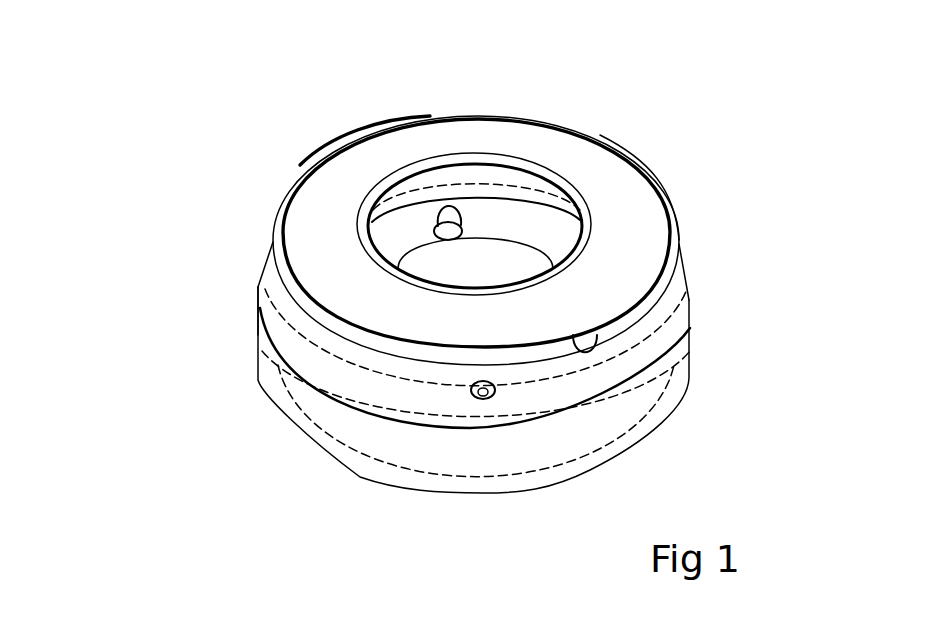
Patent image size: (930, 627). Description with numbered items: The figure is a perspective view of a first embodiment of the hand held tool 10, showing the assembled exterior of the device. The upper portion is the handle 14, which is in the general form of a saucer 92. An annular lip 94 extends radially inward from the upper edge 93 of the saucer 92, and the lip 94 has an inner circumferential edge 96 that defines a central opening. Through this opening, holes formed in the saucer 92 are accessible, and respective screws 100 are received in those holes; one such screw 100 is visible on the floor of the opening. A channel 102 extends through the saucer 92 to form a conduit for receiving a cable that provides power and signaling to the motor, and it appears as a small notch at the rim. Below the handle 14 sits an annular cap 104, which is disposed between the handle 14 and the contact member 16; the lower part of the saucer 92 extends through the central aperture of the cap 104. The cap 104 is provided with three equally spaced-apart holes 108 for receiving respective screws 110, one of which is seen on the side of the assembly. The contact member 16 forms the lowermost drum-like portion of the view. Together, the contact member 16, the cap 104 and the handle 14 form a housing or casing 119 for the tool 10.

The hand held tool 10 is at (598, 102).
The handle 14 is at (417, 145).
The contact member 16 is at (325, 413).
The saucer 92 is at (328, 128).
The upper edge 93 is at (676, 213).
The annular lip 94 is at (622, 195).
The inner circumferential edge 96 is at (567, 182).
The screws 100 is at (458, 215).
The channel 102 is at (592, 352).
The annular cap 104 is at (682, 293).
The holes 108 is at (494, 386).
The screws 110 is at (485, 398).
The housing or casing 119 is at (270, 341).